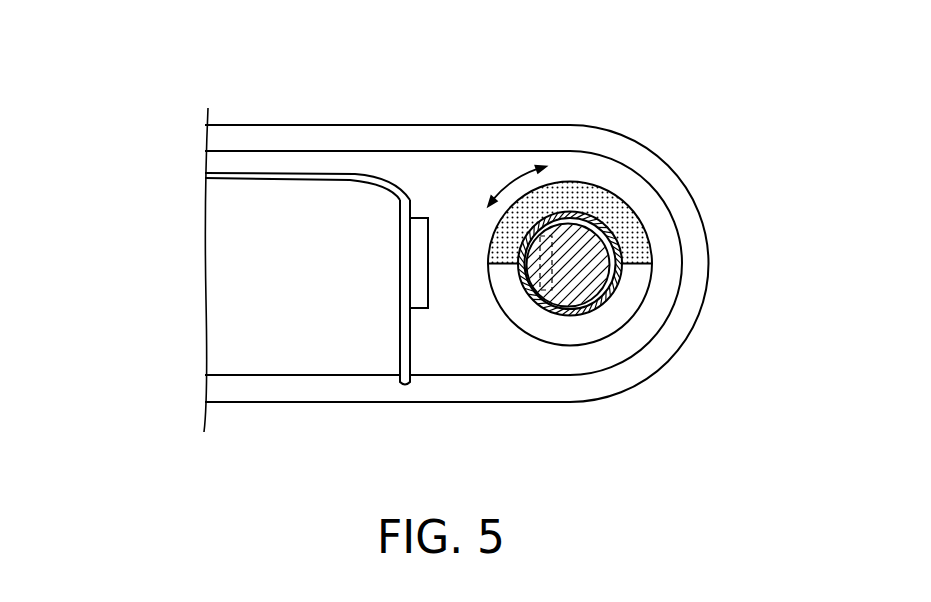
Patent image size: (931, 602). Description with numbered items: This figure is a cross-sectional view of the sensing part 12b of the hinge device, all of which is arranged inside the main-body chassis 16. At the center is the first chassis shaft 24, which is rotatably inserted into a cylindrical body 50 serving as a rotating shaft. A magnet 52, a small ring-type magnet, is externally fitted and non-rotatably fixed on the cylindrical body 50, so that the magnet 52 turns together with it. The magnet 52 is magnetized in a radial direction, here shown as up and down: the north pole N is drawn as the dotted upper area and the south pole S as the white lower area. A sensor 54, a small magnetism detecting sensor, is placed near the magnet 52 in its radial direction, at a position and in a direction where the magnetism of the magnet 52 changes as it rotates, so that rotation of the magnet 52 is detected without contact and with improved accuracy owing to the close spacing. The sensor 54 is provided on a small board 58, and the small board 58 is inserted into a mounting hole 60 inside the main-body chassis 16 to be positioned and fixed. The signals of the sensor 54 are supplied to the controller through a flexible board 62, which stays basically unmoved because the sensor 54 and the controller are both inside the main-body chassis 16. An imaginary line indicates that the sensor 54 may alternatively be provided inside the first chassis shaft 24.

The sensing part 12b is at (530, 85).
The main-body chassis 16 is at (667, 185).
The first chassis shaft 24 is at (585, 282).
The cylindrical body 50 is at (648, 246).
The magnet 52 is at (597, 327).
The sensor 54 is at (428, 246).
The small board 58 is at (400, 294).
The mounting hole 60 is at (406, 368).
The flexible board 62 is at (304, 173).
The north pole N is at (602, 200).
The south pole S is at (556, 332).